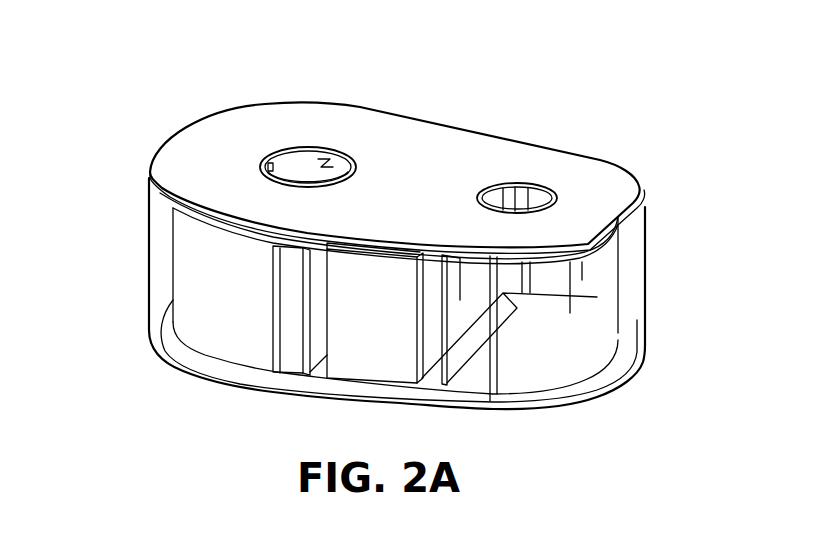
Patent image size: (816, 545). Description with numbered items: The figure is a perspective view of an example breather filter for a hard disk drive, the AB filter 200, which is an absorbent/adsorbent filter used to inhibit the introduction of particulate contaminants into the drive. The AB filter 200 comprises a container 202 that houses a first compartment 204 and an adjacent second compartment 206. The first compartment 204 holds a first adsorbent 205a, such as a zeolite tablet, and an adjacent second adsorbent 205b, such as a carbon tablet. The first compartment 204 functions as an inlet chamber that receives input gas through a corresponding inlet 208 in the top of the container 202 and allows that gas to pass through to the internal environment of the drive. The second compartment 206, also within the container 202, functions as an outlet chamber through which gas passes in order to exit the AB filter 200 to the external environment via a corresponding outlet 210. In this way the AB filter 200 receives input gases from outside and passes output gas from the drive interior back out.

The AB filter 200 is at (166, 66).
The container 202 is at (150, 212).
The first compartment 204 is at (160, 275).
The first adsorbent 205a is at (225, 313).
The second adsorbent 205b is at (363, 340).
The second compartment 206 is at (563, 355).
The inlet 208 is at (303, 170).
The outlet 210 is at (523, 200).